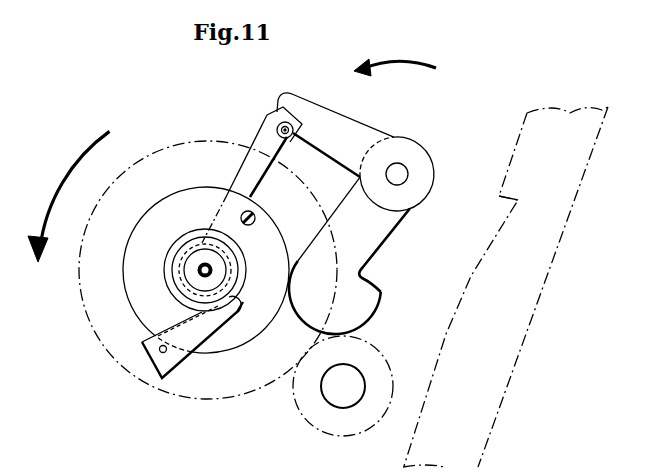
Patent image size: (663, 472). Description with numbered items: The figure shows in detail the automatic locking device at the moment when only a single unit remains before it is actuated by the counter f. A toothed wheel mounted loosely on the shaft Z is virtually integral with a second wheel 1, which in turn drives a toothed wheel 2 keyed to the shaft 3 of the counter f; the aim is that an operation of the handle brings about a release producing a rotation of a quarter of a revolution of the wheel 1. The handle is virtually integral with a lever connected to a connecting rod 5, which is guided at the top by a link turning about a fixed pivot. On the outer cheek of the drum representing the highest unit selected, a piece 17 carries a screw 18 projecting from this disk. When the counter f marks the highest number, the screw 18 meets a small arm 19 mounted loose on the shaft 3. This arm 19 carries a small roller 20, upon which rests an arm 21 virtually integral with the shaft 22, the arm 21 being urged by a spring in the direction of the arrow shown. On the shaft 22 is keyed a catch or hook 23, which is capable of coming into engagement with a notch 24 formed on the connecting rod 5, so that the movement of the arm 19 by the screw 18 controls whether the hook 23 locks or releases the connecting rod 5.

The second wheel 1 is at (305, 418).
The toothed wheel 2 is at (81, 292).
The shaft 3 is at (202, 268).
The counter f is at (193, 243).
The connecting rod 5 is at (505, 287).
The piece 17 is at (141, 222).
The screw 18 is at (253, 214).
The small arm 19 is at (242, 169).
The small roller 20 is at (286, 140).
The arm 21 is at (335, 135).
The shaft 22 is at (404, 166).
The catch or hook 23 is at (349, 255).
The notch 24 is at (509, 205).
The shaft Z is at (343, 387).